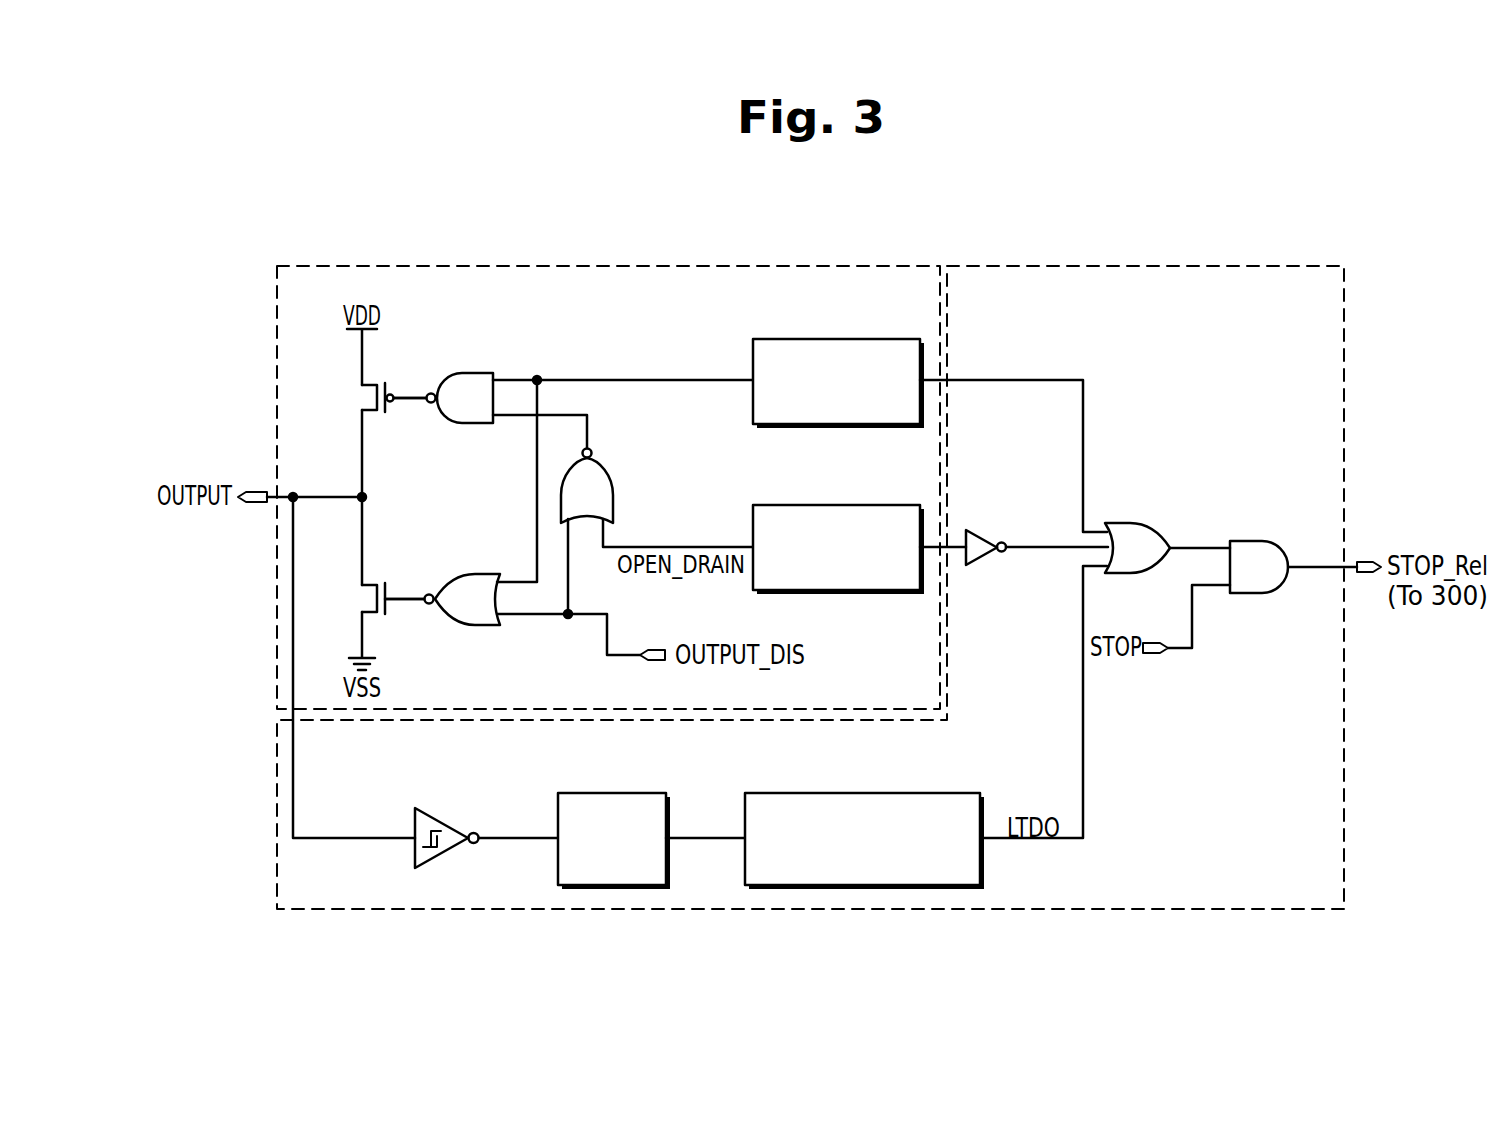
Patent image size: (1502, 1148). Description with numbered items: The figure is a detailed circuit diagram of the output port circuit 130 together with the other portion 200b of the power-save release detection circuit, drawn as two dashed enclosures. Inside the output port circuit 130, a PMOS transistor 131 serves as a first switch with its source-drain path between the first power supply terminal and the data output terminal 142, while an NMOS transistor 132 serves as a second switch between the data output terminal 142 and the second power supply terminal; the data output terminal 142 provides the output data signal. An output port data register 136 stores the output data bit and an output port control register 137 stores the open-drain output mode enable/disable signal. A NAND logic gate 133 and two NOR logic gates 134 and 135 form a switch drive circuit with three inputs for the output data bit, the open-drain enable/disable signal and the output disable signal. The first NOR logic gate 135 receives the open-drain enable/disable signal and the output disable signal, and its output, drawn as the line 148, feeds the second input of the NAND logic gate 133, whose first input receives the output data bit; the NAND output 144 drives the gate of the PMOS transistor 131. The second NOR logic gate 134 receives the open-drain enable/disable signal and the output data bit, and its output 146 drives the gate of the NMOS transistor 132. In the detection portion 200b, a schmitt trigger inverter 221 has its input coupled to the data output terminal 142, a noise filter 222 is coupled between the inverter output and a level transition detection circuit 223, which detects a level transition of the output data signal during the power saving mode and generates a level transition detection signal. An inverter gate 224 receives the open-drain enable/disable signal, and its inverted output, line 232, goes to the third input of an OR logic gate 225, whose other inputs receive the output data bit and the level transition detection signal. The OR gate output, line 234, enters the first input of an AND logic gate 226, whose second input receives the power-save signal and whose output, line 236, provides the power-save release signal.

The output port circuit 130 is at (698, 266).
The power-save release detection circuit 200b is at (1266, 267).
The PMOS transistor 131 is at (370, 397).
The NMOS transistor 132 is at (370, 599).
The NAND logic gate 133 is at (476, 373).
The second NOR logic gate 134 is at (482, 574).
The first NOR logic gate 135 is at (612, 490).
The output port data register 136 is at (895, 339).
The output port control register 137 is at (895, 505).
The data output terminal 142 is at (367, 497).
The first output of the switch drive circuit 144 is at (413, 394).
The second output of the switch drive circuit 146 is at (400, 597).
The NOR gate output node 148 is at (588, 415).
The schmitt trigger inverter 221 is at (441, 820).
The noise filter 222 is at (640, 793).
The level transition detection circuit 223 is at (945, 793).
The inverter gate 224 is at (985, 531).
The OR logic gate 225 is at (1118, 523).
The AND logic gate 226 is at (1248, 541).
The inverted open drain signal line 232 is at (1045, 547).
The OR gate output signal line 234 is at (1190, 547).
The stop release signal line 236 is at (1300, 566).